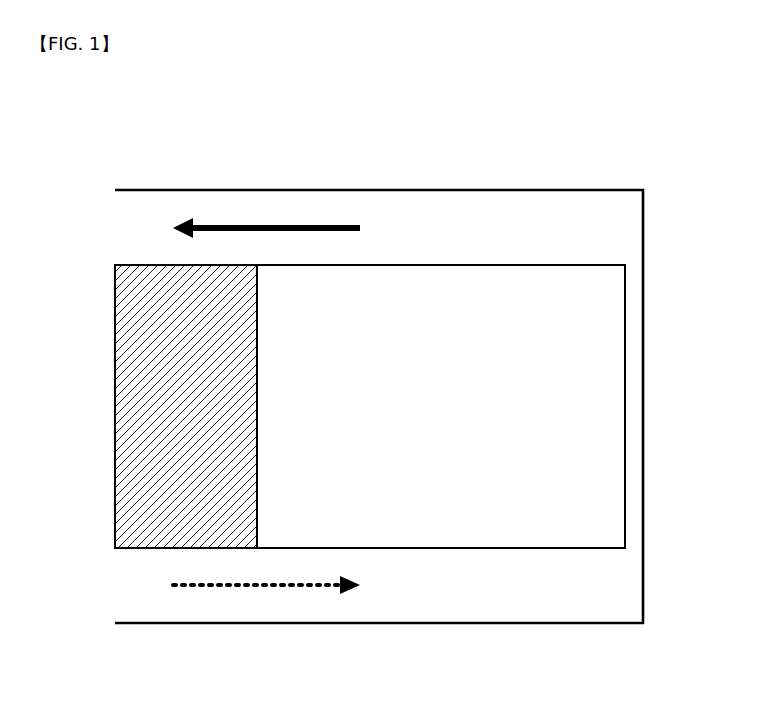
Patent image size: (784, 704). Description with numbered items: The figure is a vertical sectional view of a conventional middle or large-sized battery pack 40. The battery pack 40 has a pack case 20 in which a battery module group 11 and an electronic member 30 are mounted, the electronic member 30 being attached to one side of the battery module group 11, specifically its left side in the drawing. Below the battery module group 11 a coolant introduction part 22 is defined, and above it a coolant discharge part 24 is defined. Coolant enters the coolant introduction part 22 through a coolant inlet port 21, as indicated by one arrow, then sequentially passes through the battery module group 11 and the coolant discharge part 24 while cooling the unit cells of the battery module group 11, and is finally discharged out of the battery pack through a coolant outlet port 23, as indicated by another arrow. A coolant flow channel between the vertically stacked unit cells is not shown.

The battery pack 40 is at (101, 176).
The pack case 20 is at (650, 401).
The battery module group 11 is at (418, 520).
The electronic member 30 is at (140, 398).
The coolant outlet port 23 is at (130, 227).
The coolant inlet port 21 is at (130, 583).
The coolant discharge part 24 is at (520, 228).
The coolant introduction part 22 is at (520, 585).